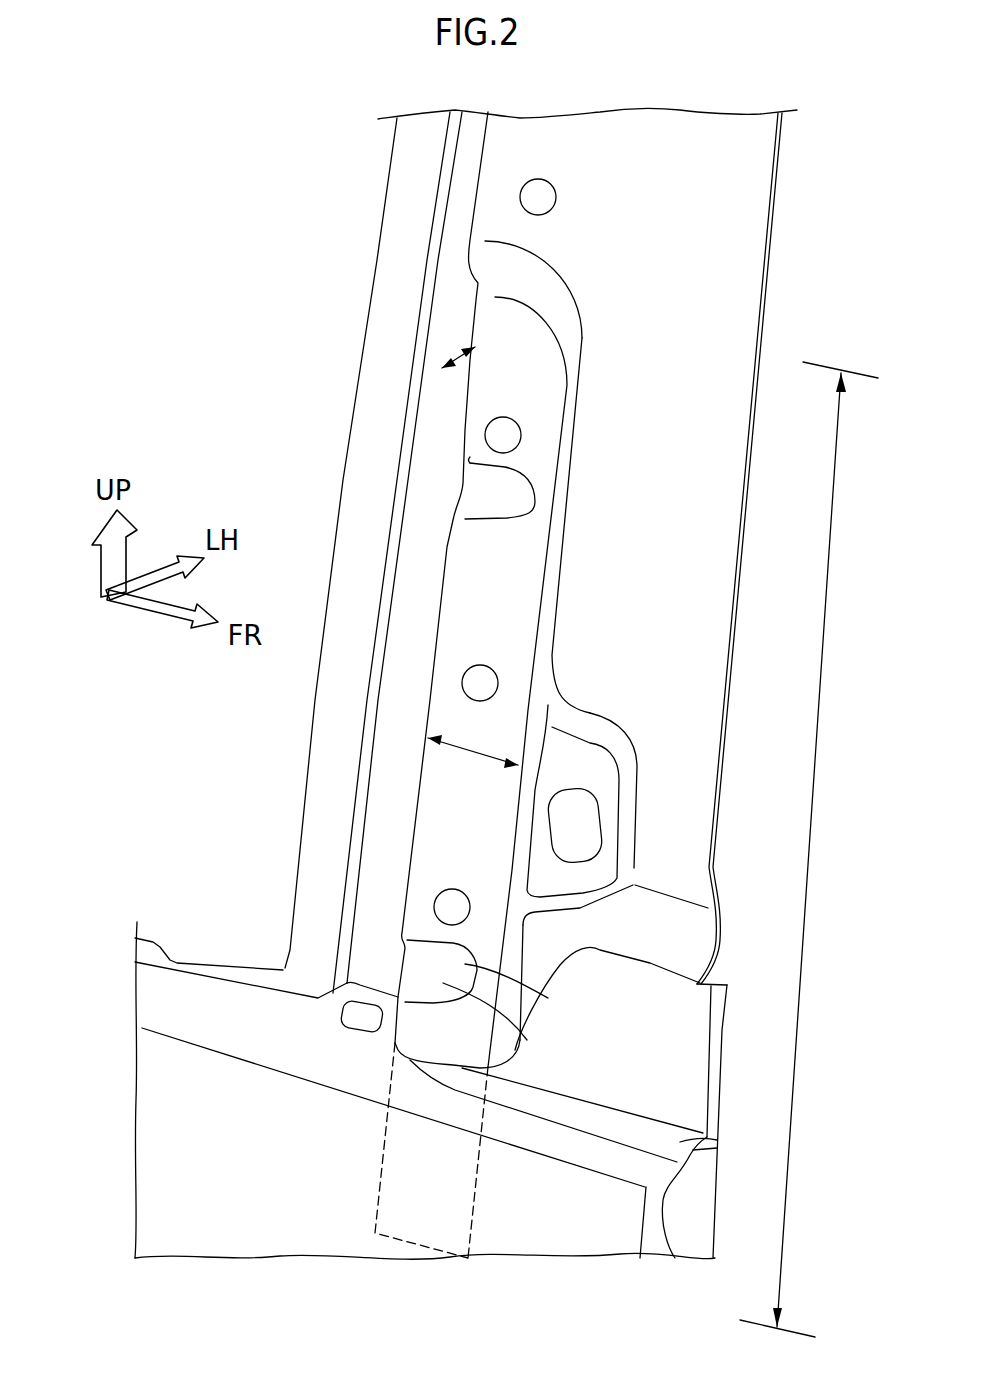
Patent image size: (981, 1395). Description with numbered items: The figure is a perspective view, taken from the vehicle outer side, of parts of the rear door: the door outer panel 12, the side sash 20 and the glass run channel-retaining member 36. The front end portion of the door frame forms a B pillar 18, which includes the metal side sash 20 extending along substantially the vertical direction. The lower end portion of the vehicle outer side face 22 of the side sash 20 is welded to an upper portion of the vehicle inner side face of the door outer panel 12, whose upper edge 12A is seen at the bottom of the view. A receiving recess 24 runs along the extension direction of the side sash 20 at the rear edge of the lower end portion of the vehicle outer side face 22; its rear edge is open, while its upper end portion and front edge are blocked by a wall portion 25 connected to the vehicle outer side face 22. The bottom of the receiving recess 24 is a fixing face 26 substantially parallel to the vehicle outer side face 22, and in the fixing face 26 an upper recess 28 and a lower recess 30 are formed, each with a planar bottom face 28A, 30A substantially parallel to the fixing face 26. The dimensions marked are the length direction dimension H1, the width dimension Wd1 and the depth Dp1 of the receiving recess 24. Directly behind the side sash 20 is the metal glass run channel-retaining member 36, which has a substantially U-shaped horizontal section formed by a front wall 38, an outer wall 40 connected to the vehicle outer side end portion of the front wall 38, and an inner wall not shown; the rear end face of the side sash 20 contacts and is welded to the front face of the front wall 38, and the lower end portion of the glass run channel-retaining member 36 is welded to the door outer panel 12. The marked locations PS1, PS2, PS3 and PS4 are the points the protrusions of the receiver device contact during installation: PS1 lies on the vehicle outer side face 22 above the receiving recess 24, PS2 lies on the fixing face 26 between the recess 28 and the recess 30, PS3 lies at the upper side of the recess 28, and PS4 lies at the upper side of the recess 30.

The door outer panel 12 is at (153, 1138).
The upper edge of the door outer panel 12A is at (190, 1007).
The B pillar 18 is at (800, 214).
The side sash 20 is at (737, 310).
The vehicle outer side face 22 is at (752, 148).
The receiving recess 24 is at (525, 600).
The wall portion 25 is at (565, 493).
The fixing face 26 is at (520, 658).
The recess 28 is at (508, 510).
The bottom face of the recess 28A is at (518, 487).
The recess 30 is at (548, 998).
The bottom face of the recess 30A is at (527, 1040).
The glass run channel-retaining member 36 is at (367, 458).
The front wall 38 is at (387, 815).
The outer wall 40 is at (320, 868).
The location PS1 is at (556, 197).
The location PS2 is at (477, 665).
The location PS3 is at (521, 431).
The location PS4 is at (470, 907).
The depth of the receiving recess Dp1 is at (458, 357).
The width dimension of the receiving recess Wd1 is at (470, 758).
The length direction dimension of the receiving recess H1 is at (815, 757).